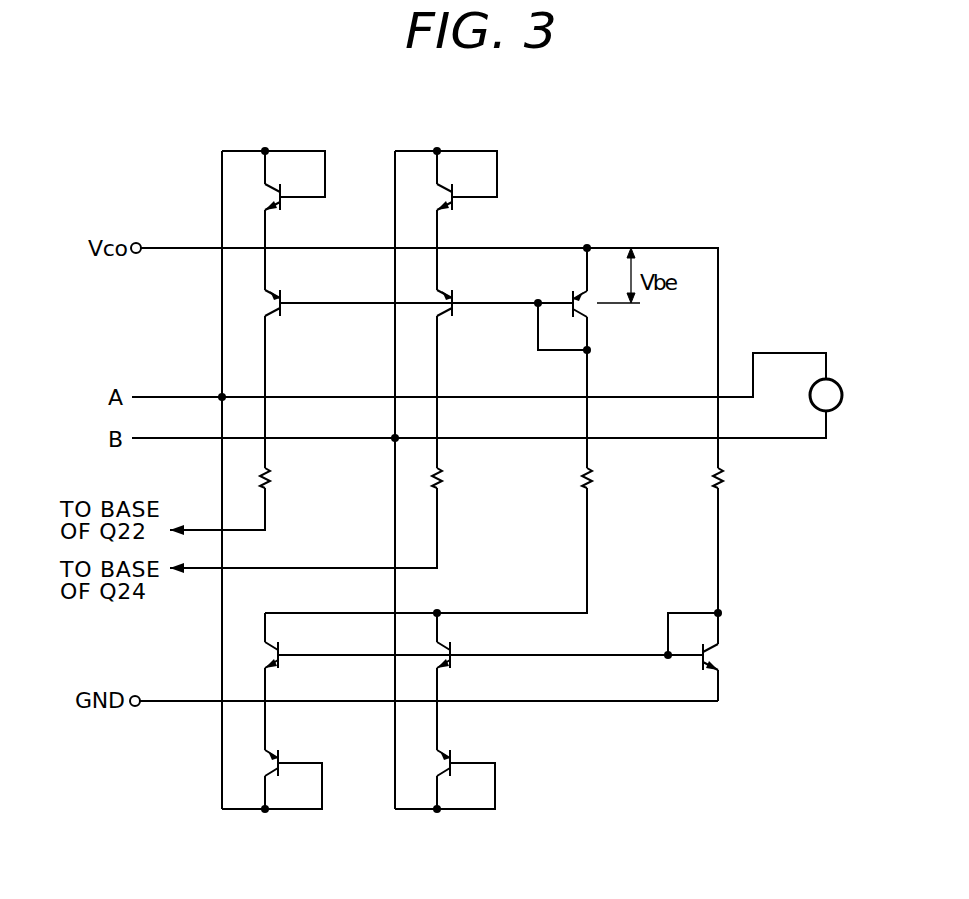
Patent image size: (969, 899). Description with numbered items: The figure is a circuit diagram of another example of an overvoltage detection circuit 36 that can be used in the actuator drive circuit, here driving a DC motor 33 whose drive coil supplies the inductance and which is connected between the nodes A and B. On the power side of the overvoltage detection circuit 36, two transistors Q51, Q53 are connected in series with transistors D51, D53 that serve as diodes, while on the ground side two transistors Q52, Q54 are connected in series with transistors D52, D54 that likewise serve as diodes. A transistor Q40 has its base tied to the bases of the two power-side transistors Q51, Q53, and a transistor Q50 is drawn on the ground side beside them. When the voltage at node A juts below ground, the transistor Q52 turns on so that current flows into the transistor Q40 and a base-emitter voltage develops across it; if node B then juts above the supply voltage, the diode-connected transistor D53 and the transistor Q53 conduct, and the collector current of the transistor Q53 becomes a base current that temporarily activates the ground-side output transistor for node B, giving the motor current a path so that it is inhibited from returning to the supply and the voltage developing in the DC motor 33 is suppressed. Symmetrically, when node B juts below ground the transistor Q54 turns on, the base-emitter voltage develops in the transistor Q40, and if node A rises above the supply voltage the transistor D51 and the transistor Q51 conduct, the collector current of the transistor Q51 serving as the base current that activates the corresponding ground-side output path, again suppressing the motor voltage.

The DC motor 33 is at (841, 386).
The overvoltage detection circuit 36 is at (502, 830).
The transistor Q40 is at (600, 314).
The transistor Q50 is at (732, 651).
The power-side transistor Q51 is at (291, 314).
The ground-side transistor Q52 is at (291, 649).
The power-side transistor Q53 is at (464, 314).
The ground-side transistor Q54 is at (464, 649).
The transistor D51 serving as diode D51 is at (290, 192).
The transistor D52 serving as diode D52 is at (290, 755).
The transistor D53 serving as diode D53 is at (463, 192).
The transistor D54 serving as diode D54 is at (463, 755).